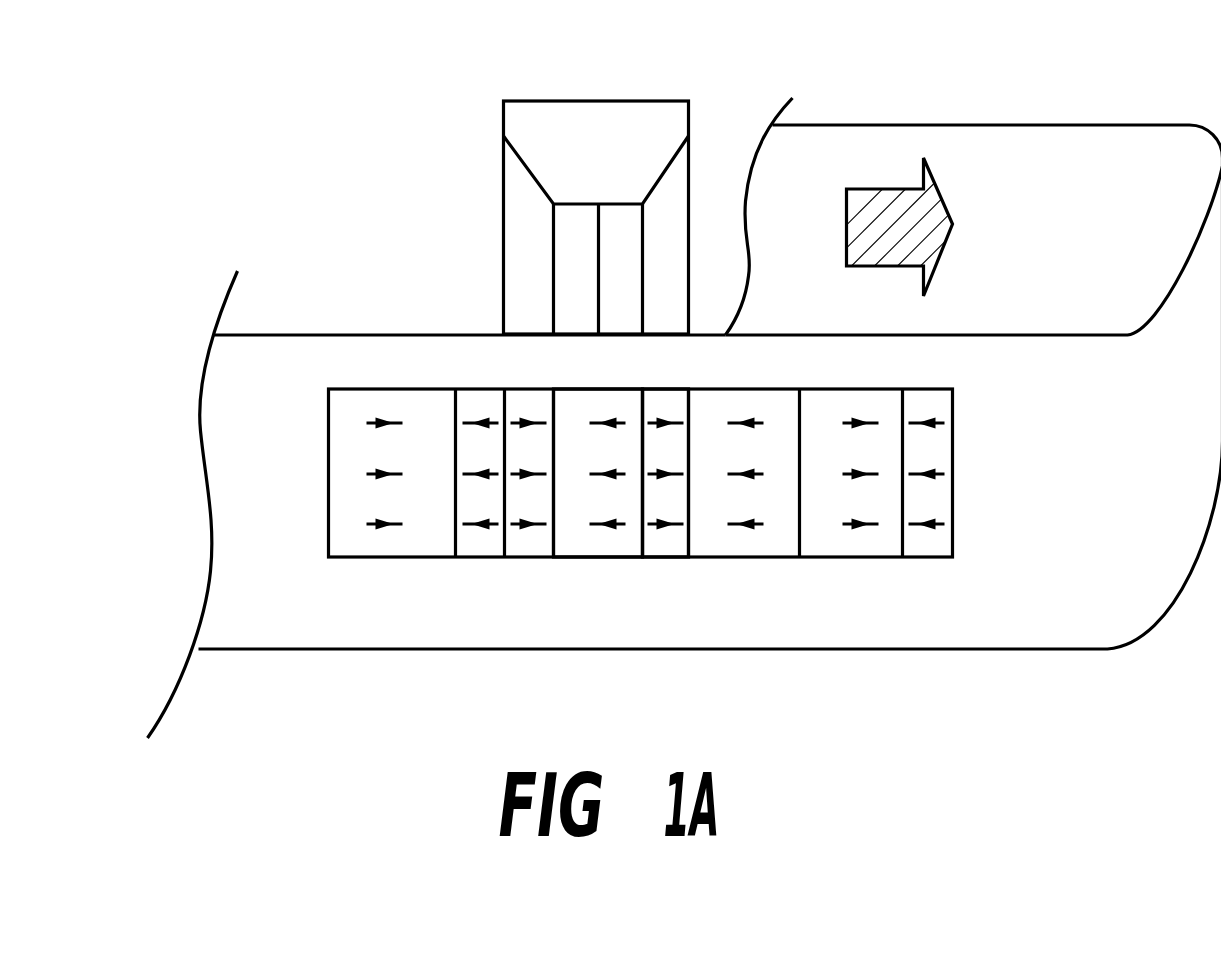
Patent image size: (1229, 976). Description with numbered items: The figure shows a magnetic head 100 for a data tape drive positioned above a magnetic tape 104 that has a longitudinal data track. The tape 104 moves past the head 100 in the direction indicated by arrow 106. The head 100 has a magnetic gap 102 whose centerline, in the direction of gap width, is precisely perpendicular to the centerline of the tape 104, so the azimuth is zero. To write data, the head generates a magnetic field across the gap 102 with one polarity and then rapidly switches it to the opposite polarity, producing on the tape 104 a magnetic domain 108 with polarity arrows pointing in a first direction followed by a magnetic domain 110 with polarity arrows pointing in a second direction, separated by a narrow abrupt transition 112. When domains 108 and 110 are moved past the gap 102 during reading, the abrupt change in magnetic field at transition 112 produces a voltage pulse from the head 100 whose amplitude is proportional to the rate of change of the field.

The magnetic head 100 is at (595, 100).
The magnetic gap 102 is at (597, 305).
The magnetic tape 104 is at (1003, 123).
The arrow 106 is at (938, 197).
The magnetic domain 108 is at (600, 557).
The magnetic domain 110 is at (666, 557).
The transition 112 is at (639, 557).